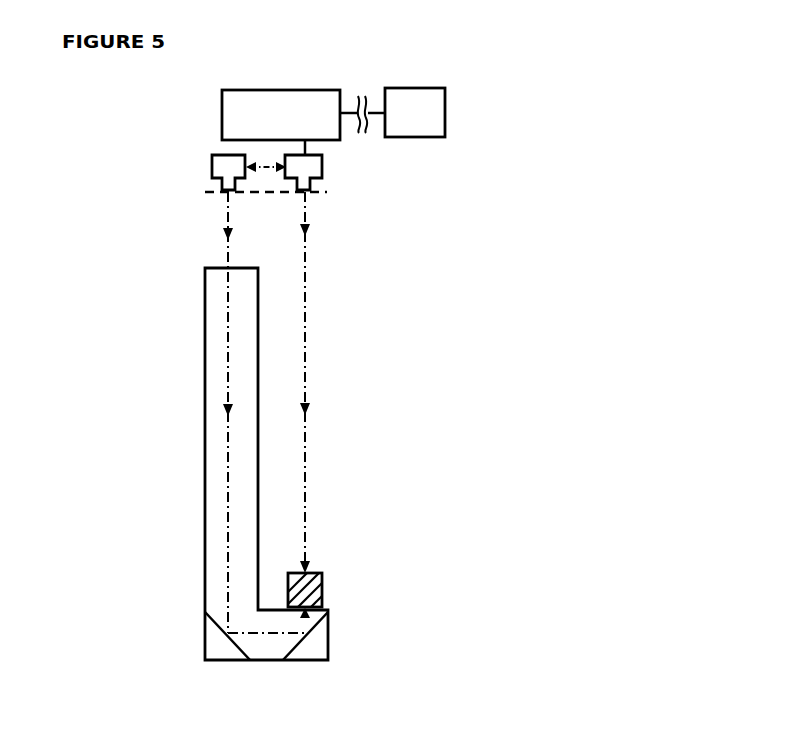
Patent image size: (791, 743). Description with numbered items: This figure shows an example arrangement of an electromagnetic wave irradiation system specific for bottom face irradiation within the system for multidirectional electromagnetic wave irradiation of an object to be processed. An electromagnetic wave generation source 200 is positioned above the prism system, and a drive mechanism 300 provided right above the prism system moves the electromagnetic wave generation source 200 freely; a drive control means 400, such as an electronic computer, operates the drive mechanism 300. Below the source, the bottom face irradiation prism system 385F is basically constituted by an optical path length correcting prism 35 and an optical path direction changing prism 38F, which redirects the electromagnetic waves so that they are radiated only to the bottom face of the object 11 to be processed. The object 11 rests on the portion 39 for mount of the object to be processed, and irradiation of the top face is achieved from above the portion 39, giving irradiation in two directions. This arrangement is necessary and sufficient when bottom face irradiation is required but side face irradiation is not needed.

The electromagnetic wave generation source 200 is at (216, 154).
The drive mechanism 300 is at (303, 130).
The drive control means 400 is at (437, 130).
The bottom face irradiation prism system 385F is at (235, 426).
The optical path length correcting prism 35 is at (258, 363).
The object to be processed 11 is at (322, 575).
The portion for mount of object to be processed 39 is at (328, 612).
The optical path direction changing prism 38F is at (272, 633).